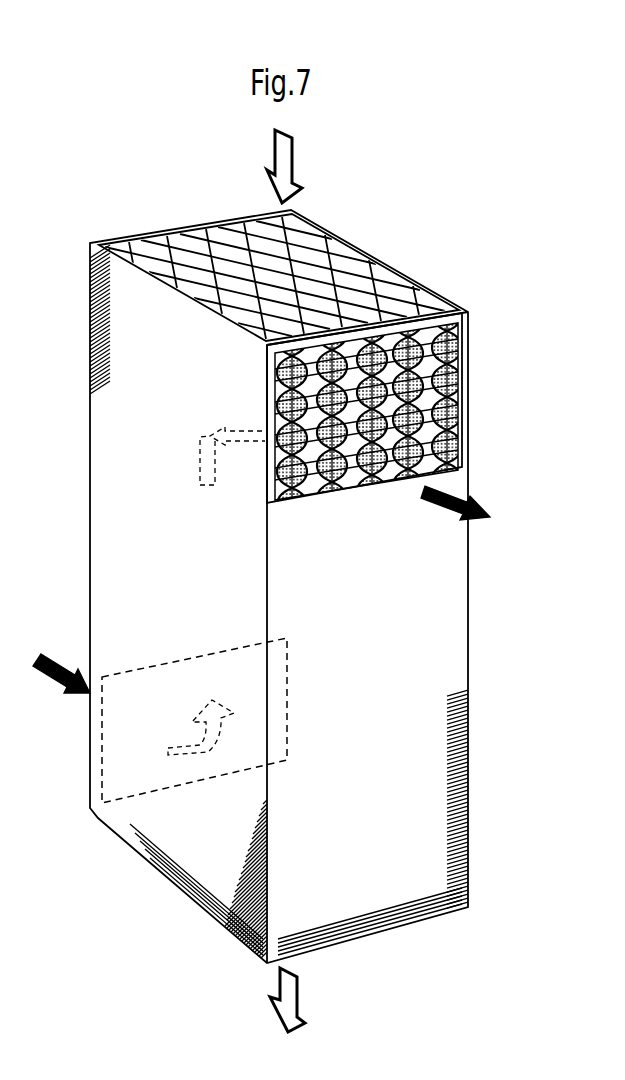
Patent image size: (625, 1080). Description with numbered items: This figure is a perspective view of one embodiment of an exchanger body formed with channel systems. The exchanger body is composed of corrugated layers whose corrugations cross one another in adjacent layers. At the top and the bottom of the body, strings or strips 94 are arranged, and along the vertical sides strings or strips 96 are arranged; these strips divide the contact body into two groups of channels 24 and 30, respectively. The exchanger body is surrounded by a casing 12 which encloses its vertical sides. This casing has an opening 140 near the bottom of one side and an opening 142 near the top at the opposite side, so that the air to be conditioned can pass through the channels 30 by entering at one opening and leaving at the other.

The housing 12 is at (468, 623).
The channels 24 is at (362, 282).
The channels 30 is at (430, 363).
The strings or strips 94 is at (400, 290).
The strings or strips 96 is at (447, 395).
The opening 140 is at (100, 764).
The opening 142 is at (463, 438).